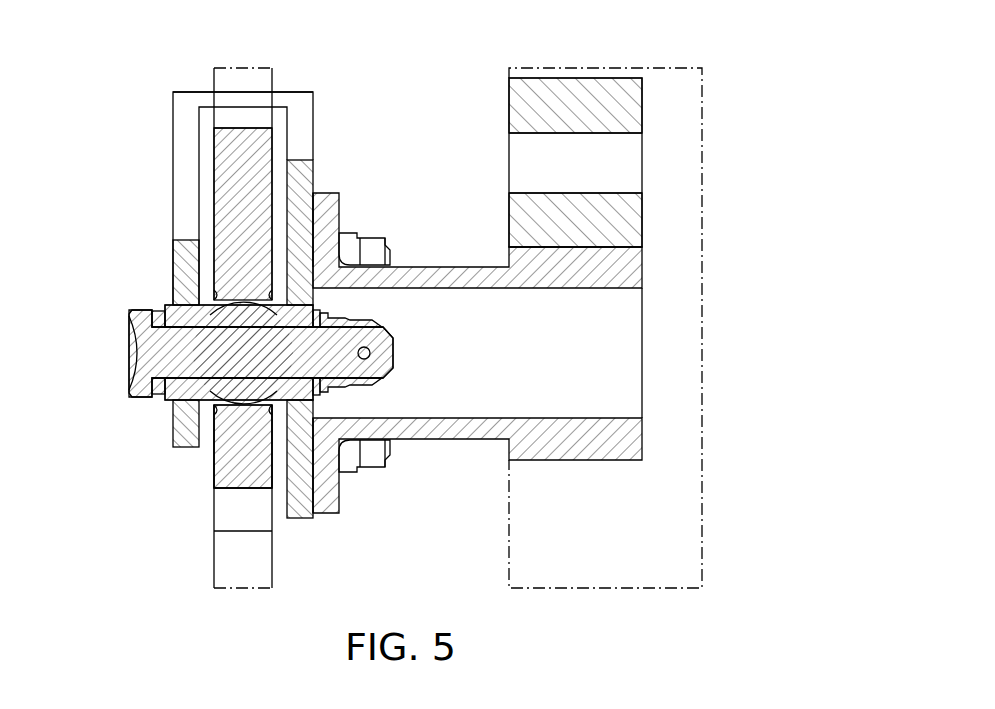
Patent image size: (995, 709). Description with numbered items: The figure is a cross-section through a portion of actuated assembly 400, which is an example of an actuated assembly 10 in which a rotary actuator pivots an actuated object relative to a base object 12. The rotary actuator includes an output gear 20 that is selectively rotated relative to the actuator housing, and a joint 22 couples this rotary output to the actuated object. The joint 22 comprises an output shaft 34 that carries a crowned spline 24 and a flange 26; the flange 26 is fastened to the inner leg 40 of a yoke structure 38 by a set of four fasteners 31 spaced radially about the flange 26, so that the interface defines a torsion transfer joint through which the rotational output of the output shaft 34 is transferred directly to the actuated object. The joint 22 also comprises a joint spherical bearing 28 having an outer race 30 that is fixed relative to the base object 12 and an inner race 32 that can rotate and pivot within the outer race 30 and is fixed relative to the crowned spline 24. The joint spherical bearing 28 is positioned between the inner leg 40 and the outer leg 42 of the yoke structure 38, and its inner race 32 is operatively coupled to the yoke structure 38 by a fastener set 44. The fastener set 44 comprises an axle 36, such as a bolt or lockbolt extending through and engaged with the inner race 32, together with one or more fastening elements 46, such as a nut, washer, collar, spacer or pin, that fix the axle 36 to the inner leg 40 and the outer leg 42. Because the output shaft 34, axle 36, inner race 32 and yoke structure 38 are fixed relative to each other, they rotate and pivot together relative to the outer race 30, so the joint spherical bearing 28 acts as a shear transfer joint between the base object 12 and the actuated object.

The actuated assembly 10 is at (779, 63).
The base object 12 is at (243, 67).
The output gear 20 is at (578, 78).
The joint 22 is at (264, 267).
The crowned spline 24 is at (642, 267).
The flange 26 is at (339, 490).
The joint spherical bearing 28 is at (242, 434).
The outer race 30 is at (239, 301).
The fasteners 31 is at (394, 258).
The inner race 32 is at (256, 300).
The output shaft 34 is at (451, 441).
The axle 36 is at (137, 306).
The yoke structure 38 is at (185, 89).
The inner leg 40 is at (313, 112).
The outer leg 42 is at (173, 152).
The fastener set 44 is at (110, 363).
The fastening elements 46 is at (352, 314).
The actuated assembly 400 is at (449, 302).